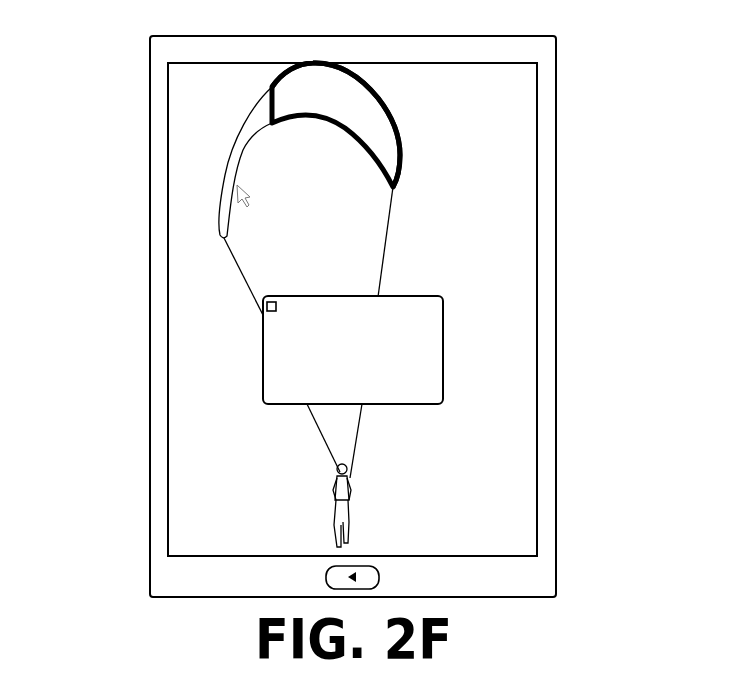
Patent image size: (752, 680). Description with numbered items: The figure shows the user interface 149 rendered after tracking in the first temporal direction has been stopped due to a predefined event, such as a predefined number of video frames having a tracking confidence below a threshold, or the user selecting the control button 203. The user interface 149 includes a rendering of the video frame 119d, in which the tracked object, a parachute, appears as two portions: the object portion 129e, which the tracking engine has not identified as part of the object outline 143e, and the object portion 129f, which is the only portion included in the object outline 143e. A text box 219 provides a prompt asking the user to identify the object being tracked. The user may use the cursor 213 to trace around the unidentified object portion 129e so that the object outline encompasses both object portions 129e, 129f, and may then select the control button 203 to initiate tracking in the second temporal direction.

The user interface 149 is at (598, 495).
The video frame 119d is at (182, 492).
The object portion 129e is at (245, 138).
The object portion 129f is at (360, 113).
The object outline 143e is at (403, 172).
The cursor 213 is at (237, 185).
The text box 219 is at (273, 387).
The control button 203 is at (365, 571).